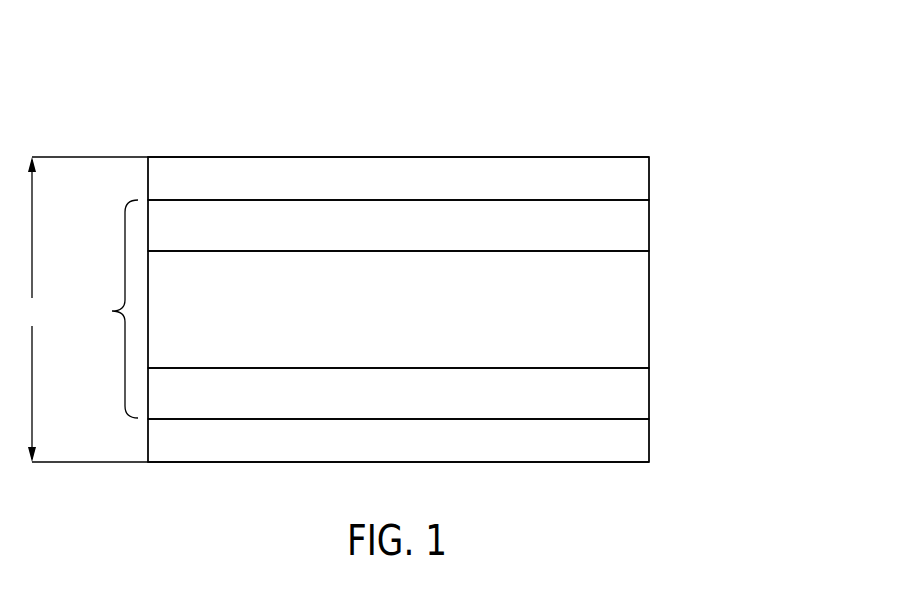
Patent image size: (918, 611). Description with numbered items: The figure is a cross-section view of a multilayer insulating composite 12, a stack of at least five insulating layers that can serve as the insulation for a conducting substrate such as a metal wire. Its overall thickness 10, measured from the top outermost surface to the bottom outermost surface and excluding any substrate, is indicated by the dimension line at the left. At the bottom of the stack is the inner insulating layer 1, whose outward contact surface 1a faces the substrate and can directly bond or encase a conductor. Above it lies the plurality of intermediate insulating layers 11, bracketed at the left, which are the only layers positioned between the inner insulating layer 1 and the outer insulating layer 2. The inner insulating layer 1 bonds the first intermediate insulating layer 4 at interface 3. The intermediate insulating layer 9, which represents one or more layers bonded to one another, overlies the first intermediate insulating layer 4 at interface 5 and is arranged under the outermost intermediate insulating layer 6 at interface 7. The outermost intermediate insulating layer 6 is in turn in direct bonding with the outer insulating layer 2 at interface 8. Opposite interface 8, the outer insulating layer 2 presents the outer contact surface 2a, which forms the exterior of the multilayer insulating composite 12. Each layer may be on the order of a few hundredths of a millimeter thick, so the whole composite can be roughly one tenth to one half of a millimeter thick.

The inner insulating layer 1 is at (640, 443).
The outward contact surface 1a is at (543, 462).
The outer insulating layer 2 is at (640, 177).
The outer contact surface 2a is at (420, 157).
The interface 3 is at (622, 419).
The first intermediate insulating layer 4 is at (640, 383).
The interface 5 is at (620, 368).
The outermost intermediate insulating layer 6 is at (640, 237).
The interface 7 is at (620, 251).
The interface 8 is at (622, 200).
The intermediate insulating layer 9 is at (640, 305).
The thickness 10 is at (82, 309).
The plurality of intermediate insulating layers 11 is at (113, 309).
The multilayer insulating composite 12 is at (550, 101).